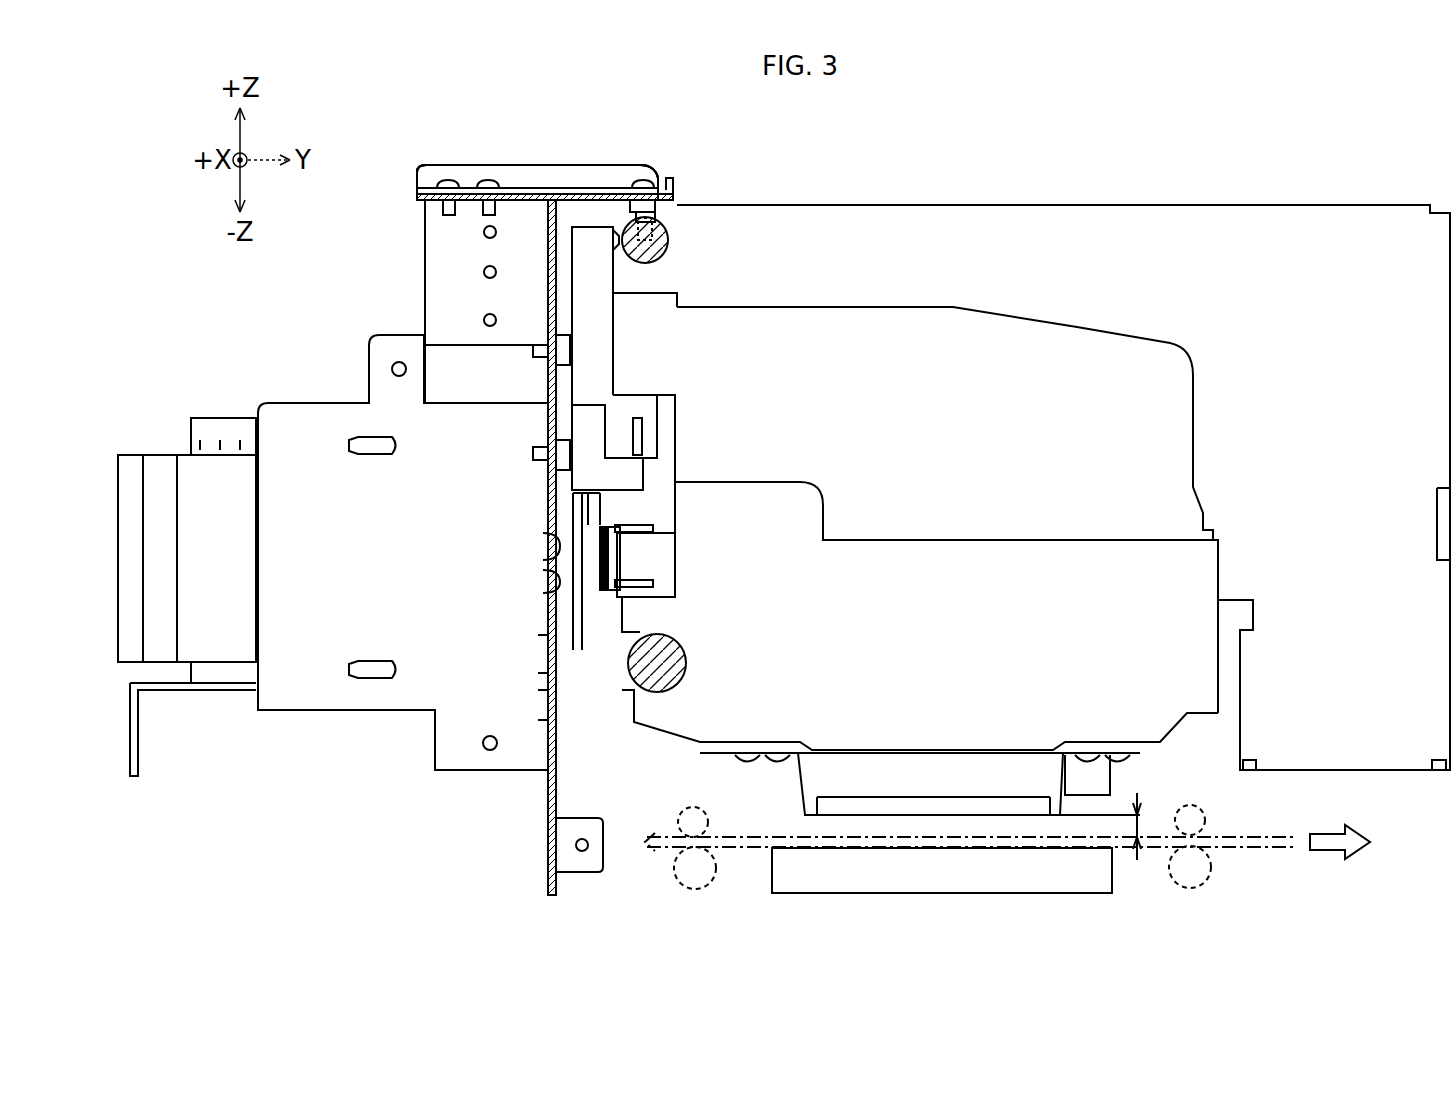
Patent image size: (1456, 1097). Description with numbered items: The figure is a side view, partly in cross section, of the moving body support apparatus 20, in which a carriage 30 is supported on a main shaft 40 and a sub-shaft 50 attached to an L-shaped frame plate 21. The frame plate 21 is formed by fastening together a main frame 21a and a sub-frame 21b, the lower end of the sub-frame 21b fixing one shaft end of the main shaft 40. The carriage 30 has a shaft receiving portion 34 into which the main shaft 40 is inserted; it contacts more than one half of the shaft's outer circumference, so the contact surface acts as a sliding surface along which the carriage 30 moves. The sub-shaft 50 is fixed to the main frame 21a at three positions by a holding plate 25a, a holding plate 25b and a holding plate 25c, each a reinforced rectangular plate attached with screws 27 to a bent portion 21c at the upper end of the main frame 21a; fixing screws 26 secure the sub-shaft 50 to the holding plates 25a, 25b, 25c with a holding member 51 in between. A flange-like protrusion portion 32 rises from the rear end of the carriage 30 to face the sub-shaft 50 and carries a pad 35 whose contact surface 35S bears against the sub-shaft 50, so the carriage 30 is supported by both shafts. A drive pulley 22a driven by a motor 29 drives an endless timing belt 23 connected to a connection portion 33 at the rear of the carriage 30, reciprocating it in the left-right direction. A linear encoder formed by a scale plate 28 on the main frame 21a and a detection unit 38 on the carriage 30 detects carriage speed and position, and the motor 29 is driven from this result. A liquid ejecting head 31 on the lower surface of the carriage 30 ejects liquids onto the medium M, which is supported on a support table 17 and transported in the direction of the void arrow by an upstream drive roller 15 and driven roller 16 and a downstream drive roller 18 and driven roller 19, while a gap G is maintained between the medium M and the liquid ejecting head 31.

The moving body support apparatus 20 is at (1102, 158).
The frame plate 21 is at (360, 243).
The main frame 21a is at (548, 297).
The sub-frame 21b is at (1007, 205).
The bent portion 21c is at (455, 222).
The drive pulley 22a is at (580, 538).
The timing belt 23 is at (638, 523).
The holding plate 25a is at (533, 182).
The holding plate 25b is at (537, 182).
The holding plate 25c is at (537, 182).
The fixing screws 26 is at (652, 180).
The screws 27 is at (486, 182).
The scale plate 28 is at (645, 432).
The motor 29 is at (220, 475).
The carriage 30 is at (1070, 345).
The liquid ejecting head 31 is at (823, 777).
The protrusion portion 32 is at (594, 250).
The connection portion 33 is at (623, 560).
The shaft receiving portion 34 is at (657, 715).
The pad 35 is at (617, 232).
The contact surface 35S is at (621, 240).
The detection unit 38 is at (640, 405).
The main shaft 40 is at (633, 688).
The sub-shaft 50 is at (668, 238).
The holding member 51 is at (668, 205).
The drive roller 15 is at (690, 890).
The driven roller 16 is at (682, 810).
The support table 17 is at (955, 893).
The drive roller 18 is at (1205, 890).
The driven roller 19 is at (1178, 806).
The gap G is at (1108, 815).
The medium M is at (1225, 837).